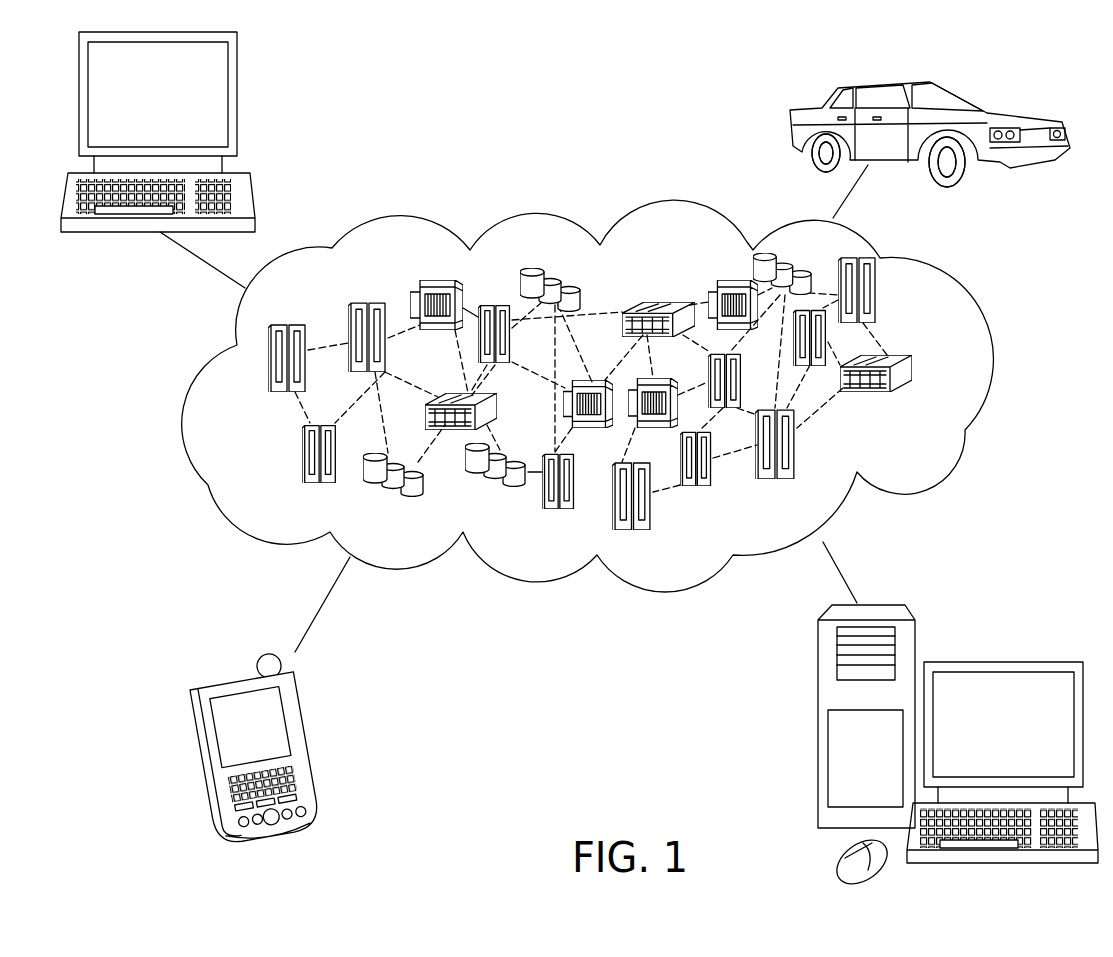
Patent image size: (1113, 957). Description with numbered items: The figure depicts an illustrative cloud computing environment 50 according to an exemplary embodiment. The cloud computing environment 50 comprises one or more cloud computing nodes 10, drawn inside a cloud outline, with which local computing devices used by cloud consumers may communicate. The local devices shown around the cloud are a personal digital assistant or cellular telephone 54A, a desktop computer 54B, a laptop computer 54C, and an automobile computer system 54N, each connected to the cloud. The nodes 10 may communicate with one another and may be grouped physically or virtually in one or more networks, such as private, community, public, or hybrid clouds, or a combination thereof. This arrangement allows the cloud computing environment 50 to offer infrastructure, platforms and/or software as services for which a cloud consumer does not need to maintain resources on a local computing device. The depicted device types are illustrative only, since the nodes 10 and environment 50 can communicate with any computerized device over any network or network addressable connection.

The cloud computing node 10 is at (917, 388).
The cloud computing environment 50 is at (625, 396).
The personal digital assistant or cellular telephone 54A is at (318, 730).
The desktop computer 54B is at (1002, 662).
The laptop computer 54C is at (238, 82).
The automobile computer system 54N is at (790, 122).